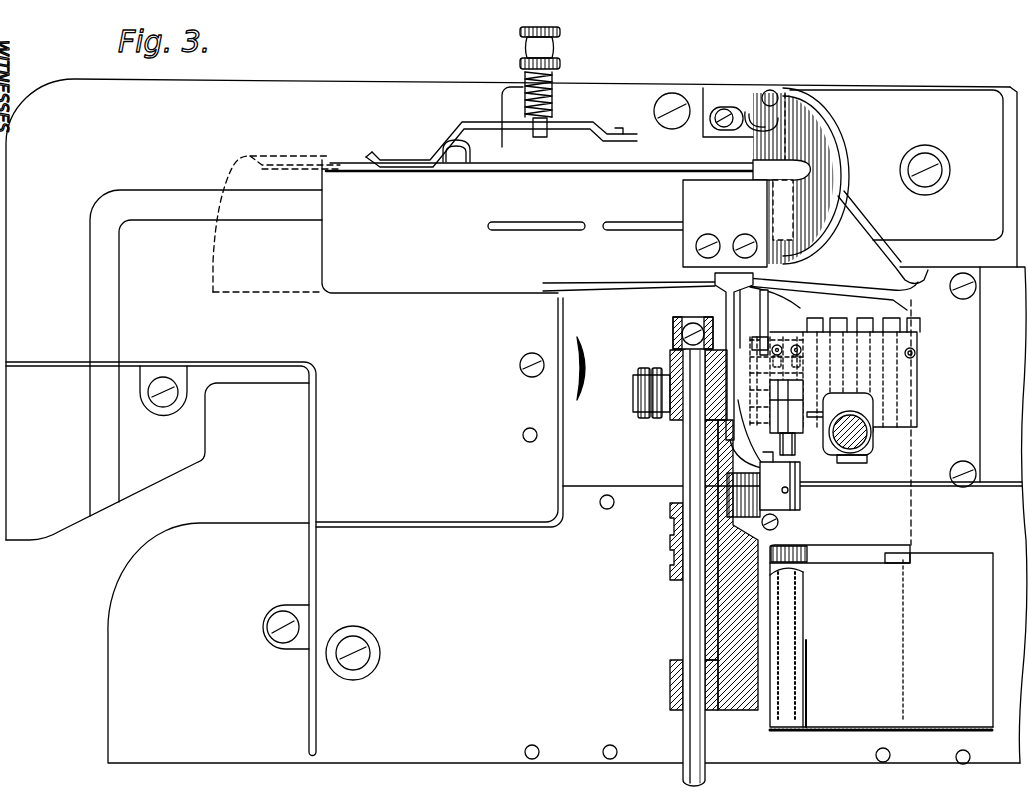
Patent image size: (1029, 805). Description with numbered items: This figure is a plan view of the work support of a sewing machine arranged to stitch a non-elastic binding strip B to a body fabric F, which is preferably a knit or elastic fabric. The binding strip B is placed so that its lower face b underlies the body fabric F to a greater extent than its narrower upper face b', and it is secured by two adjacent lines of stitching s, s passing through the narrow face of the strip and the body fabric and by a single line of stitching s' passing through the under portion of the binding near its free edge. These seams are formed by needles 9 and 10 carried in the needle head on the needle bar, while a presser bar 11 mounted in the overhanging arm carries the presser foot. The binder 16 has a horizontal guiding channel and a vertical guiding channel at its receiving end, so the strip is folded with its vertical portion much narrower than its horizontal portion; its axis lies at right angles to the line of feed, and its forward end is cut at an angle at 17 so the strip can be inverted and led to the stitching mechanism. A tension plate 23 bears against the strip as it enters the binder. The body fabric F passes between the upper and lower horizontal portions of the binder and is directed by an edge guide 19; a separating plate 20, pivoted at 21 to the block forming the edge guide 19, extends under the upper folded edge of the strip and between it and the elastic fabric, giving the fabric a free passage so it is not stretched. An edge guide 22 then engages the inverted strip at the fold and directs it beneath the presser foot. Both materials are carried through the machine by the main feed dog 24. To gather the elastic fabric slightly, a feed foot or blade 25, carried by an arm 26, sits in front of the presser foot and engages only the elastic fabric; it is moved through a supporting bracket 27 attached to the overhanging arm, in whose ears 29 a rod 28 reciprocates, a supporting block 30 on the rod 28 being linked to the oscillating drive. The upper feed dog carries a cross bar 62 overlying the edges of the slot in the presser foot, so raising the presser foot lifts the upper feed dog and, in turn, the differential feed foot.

The needle 9 is at (916, 357).
The needles 10 is at (796, 345).
The presser bar 11 is at (866, 444).
The binder 16 is at (584, 153).
The angled forward end of the binder 17 is at (867, 234).
The edge guide 19 is at (775, 213).
The separating plate 20 is at (838, 152).
The pivot 21 is at (783, 94).
The edge guide 22 is at (710, 284).
The tension plate 23 is at (401, 160).
The main feed dog 24 is at (773, 392).
The feed foot or blade 25 is at (850, 300).
The arm 26 is at (730, 325).
The supporting bracket 27 is at (730, 637).
The reciprocating rod 28 is at (690, 615).
The ears 29 is at (678, 416).
The supporting block 30 is at (670, 553).
The cross bar 62 is at (790, 440).
The binding strip B is at (821, 553).
The lower face of the binding strip b is at (840, 538).
The body fabric F is at (880, 583).
The lines of stitching s is at (804, 647).
The single line of stitching s' is at (923, 641).
The upper face of the binding strip b' is at (808, 647).